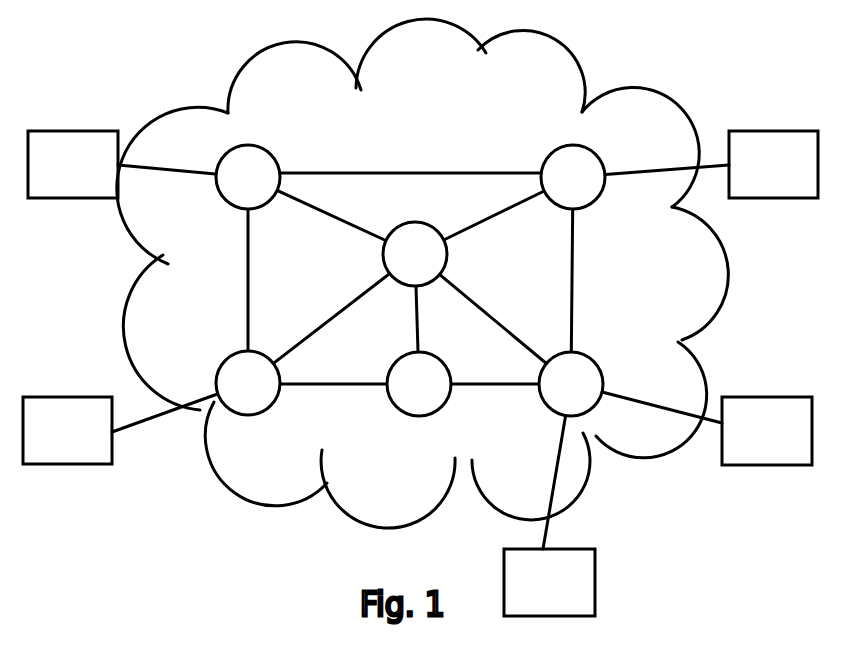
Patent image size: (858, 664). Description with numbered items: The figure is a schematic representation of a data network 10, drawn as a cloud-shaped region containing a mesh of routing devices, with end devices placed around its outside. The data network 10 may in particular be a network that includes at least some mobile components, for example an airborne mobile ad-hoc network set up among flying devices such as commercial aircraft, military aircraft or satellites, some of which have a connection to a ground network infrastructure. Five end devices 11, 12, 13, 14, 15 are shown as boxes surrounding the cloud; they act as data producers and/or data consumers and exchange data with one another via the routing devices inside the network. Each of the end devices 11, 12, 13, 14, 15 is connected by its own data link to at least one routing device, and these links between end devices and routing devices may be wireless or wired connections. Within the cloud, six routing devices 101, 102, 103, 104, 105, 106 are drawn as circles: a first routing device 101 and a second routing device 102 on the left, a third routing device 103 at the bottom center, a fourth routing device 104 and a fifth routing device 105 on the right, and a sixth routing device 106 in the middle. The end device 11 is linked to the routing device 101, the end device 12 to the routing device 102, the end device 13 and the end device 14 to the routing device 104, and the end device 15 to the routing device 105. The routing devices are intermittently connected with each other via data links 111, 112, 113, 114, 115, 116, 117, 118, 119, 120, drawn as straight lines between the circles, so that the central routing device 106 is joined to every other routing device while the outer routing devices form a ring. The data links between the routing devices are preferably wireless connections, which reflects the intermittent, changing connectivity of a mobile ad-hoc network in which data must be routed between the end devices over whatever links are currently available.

The data network 10 is at (166, 506).
The end device 11 is at (69, 148).
The end device 12 is at (72, 414).
The end device 13 is at (587, 582).
The end device 14 is at (772, 412).
The end device 15 is at (775, 185).
The routing device 101 is at (240, 164).
The routing device 102 is at (248, 398).
The routing device 103 is at (427, 390).
The routing device 104 is at (585, 400).
The routing device 105 is at (579, 162).
The routing device 106 is at (421, 240).
The data link 111 is at (361, 172).
The data link 112 is at (357, 222).
The data link 113 is at (246, 272).
The data link 114 is at (296, 350).
The data link 115 is at (319, 385).
The data link 116 is at (419, 305).
The data link 117 is at (494, 385).
The data link 118 is at (474, 300).
The data link 119 is at (572, 307).
The data link 120 is at (503, 222).